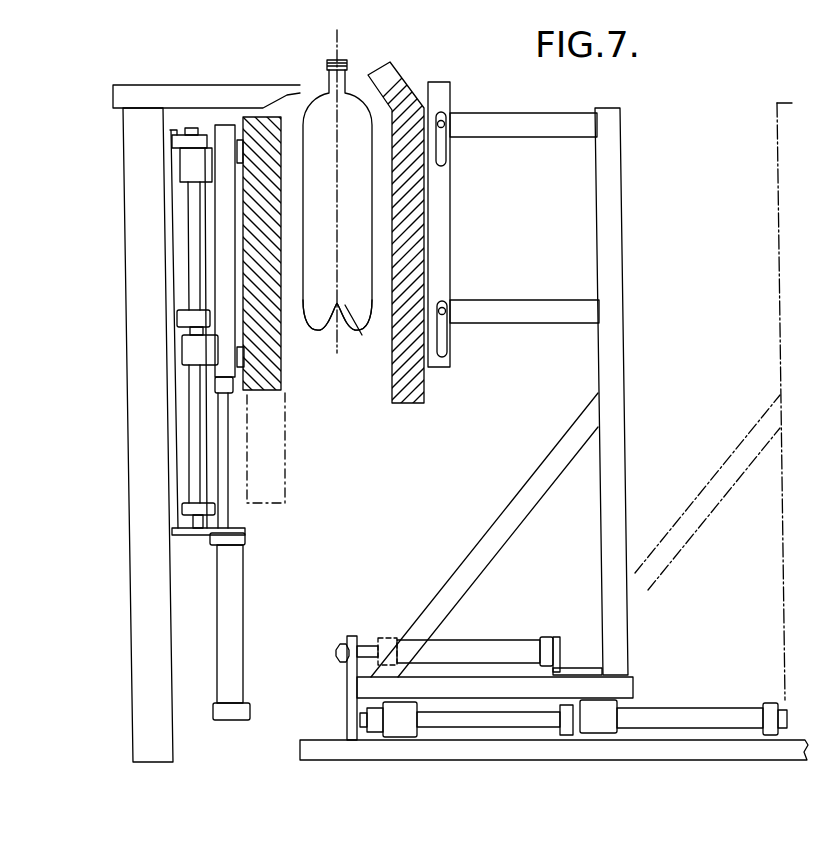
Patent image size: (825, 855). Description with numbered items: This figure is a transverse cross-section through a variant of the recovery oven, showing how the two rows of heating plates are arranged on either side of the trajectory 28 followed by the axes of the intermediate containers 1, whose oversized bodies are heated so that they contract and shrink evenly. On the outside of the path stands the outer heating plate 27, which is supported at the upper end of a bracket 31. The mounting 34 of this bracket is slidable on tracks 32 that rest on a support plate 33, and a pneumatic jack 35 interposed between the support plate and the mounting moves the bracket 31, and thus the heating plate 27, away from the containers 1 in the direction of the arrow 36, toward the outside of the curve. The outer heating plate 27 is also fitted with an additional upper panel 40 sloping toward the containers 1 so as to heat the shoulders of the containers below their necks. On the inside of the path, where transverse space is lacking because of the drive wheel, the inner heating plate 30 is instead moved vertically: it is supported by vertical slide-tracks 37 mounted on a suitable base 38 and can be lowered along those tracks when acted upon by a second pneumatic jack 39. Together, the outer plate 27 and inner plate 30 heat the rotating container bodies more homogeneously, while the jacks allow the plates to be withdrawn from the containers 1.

The intermediate container 1 is at (330, 302).
The outer heating plate 27 is at (405, 203).
The trajectory of the container axes 28 is at (362, 335).
The inner heating plate 30 is at (262, 201).
The bracket 31 is at (611, 325).
The tracks 32 is at (515, 718).
The support plate 33 is at (335, 750).
The mounting 34 is at (468, 682).
The pneumatic jack 35 is at (512, 655).
The direction of movement 36 is at (682, 463).
The vertical slide-tracks 37 is at (195, 250).
The base 38 is at (150, 390).
The pneumatic jack 39 is at (228, 625).
The additional upper panel 40 is at (400, 74).